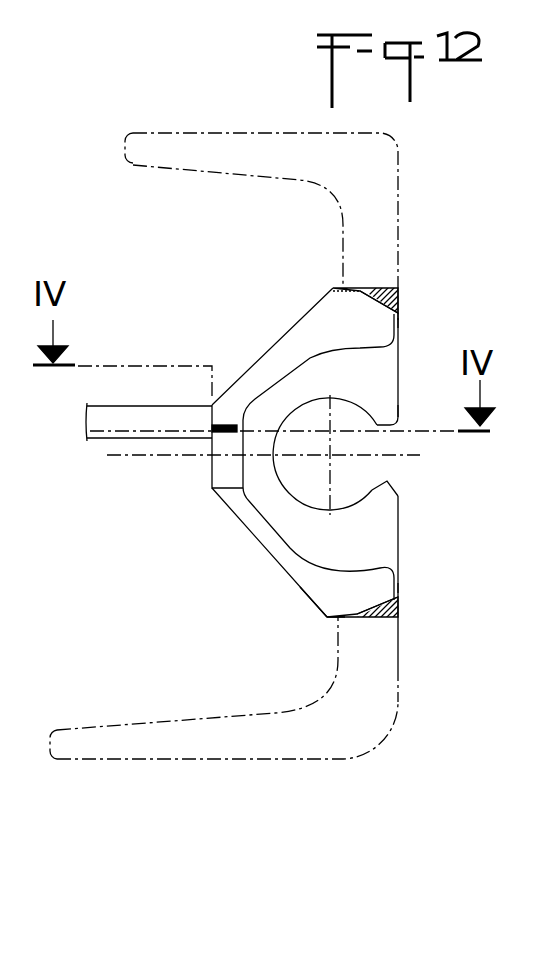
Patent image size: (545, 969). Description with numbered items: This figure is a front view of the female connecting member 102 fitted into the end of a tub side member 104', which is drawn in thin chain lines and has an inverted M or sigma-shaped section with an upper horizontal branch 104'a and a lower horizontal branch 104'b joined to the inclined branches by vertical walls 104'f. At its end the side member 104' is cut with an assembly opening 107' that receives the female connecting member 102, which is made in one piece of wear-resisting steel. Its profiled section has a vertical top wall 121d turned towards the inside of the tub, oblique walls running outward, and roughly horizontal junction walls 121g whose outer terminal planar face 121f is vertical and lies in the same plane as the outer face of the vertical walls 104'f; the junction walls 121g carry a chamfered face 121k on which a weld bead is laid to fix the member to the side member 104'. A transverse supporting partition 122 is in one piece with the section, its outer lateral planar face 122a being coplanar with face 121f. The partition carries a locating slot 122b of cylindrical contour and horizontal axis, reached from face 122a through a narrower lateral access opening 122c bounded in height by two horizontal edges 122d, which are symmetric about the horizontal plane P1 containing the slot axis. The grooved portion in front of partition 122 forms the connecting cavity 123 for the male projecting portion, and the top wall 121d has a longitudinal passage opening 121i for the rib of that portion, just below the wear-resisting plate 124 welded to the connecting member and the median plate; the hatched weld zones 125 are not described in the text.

The side member 104' is at (259, 419).
The upper horizontal branch 104'a is at (261, 183).
The lower horizontal branch 104'b is at (224, 688).
The vertical wall 104'f is at (425, 444).
The assembly opening 107' is at (306, 265).
The elastic pad 125 is at (398, 297).
The outer terminal lateral planar face 121f is at (410, 322).
The chamfered face 121k is at (375, 320).
The vertical top wall 121d is at (212, 480).
The longitudinal passage opening 121i is at (227, 458).
The junction wall 121g is at (352, 603).
The female connecting member 102 is at (261, 452).
The transverse supporting partition 122 is at (384, 477).
The outer lateral planar face 122a is at (398, 393).
The locating slot 122b is at (292, 478).
The lateral access opening 122c is at (387, 440).
The horizontal edge 122d is at (395, 481).
The connecting cavity 123 is at (352, 493).
The wear-resisting plate 124 is at (130, 420).
The horizontal plane P1 is at (117, 457).